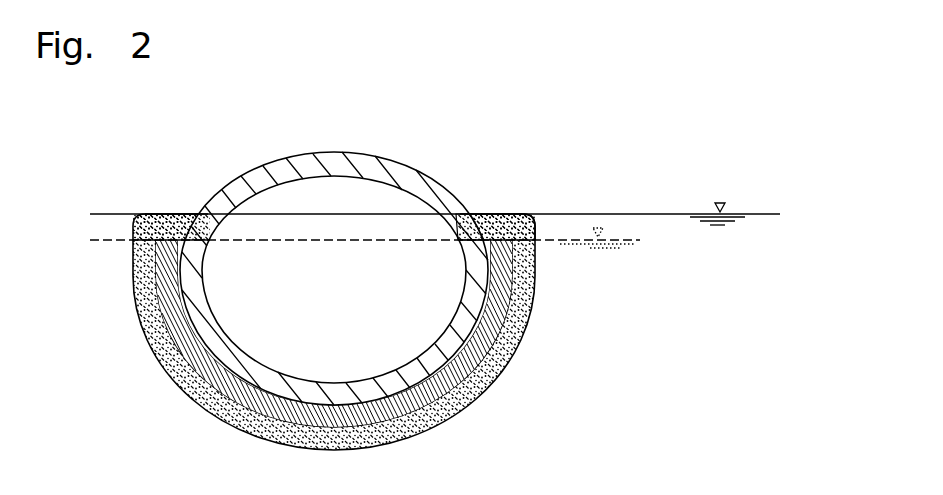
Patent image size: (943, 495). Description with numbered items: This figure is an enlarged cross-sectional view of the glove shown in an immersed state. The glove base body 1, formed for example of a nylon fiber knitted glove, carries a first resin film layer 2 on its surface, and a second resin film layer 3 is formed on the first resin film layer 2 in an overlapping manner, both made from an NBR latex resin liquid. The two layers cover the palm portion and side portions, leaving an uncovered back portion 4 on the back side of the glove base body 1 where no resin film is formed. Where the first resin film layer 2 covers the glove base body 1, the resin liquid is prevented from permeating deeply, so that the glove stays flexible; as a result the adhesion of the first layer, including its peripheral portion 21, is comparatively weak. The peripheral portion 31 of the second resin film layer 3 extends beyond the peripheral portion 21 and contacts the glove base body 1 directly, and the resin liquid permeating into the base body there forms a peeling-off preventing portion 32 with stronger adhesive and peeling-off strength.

The glove base body 1 is at (334, 242).
The first resin film layer 2 is at (500, 347).
The second resin film layer 3 is at (530, 311).
The uncovered back portion 4 is at (277, 152).
The peripheral portion of the first resin film layer 21 is at (175, 258).
The peripheral portion of the second resin film layer 31 is at (505, 213).
The peeling-off preventing portion 32 is at (465, 230).